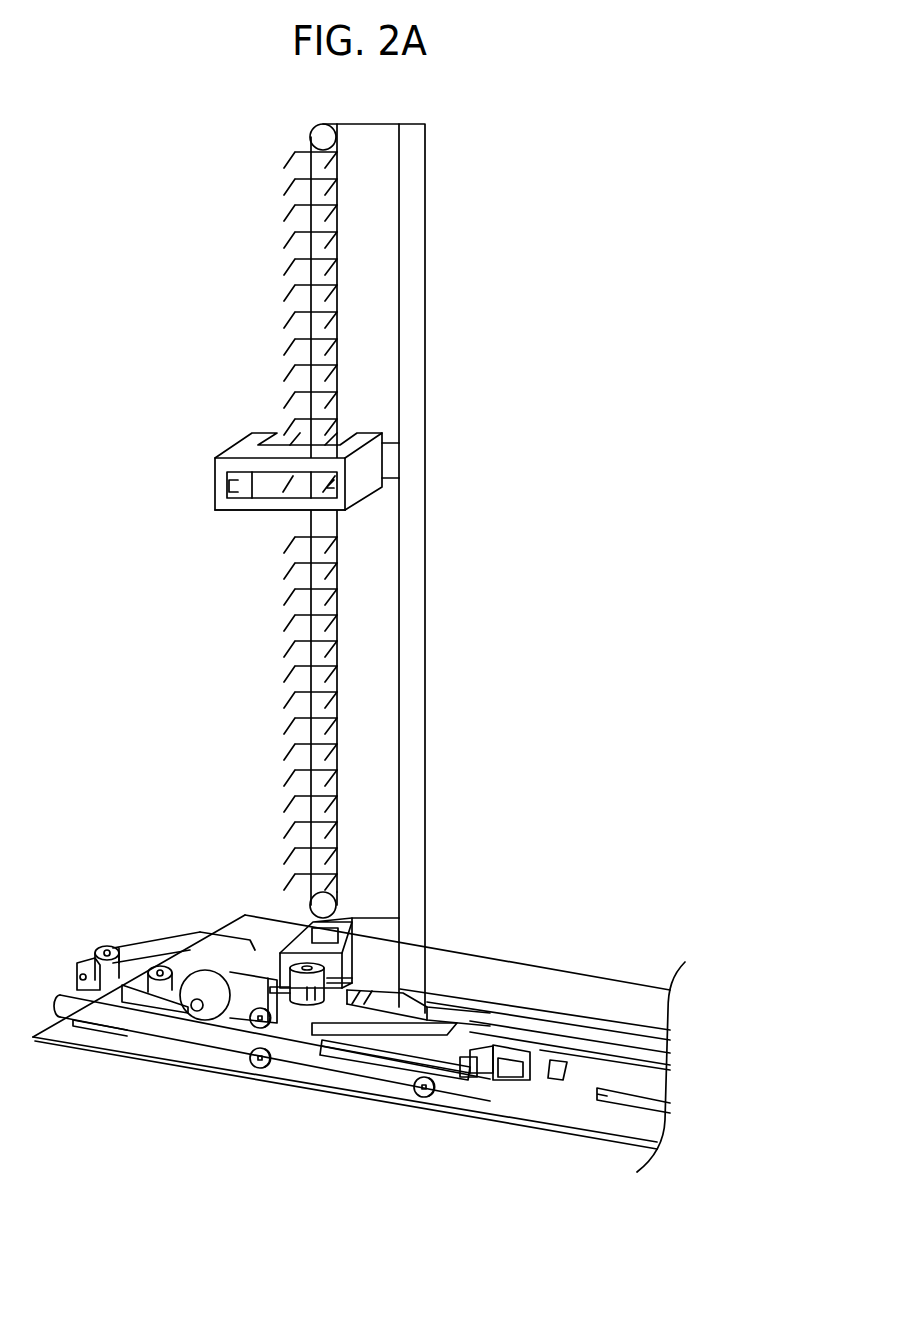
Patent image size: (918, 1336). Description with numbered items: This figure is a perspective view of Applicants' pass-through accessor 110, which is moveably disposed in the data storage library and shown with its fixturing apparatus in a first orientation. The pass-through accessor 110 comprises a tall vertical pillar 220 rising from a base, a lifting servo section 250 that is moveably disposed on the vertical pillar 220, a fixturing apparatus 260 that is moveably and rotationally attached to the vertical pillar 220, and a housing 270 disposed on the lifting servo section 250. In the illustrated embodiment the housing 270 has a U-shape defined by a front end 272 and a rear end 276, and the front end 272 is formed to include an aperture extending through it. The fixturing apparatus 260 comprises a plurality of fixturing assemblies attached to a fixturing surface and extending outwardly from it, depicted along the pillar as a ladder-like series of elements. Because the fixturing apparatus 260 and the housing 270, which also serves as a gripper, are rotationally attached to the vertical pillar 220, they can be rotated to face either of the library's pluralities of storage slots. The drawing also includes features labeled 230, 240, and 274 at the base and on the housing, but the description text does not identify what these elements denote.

The pass-through accessor 110 is at (345, 1132).
The vertical pillar 220 is at (425, 417).
The linear slide 230 is at (575, 1047).
The rail 240 is at (185, 1042).
The lifting servo section 250 is at (392, 462).
The fixturing apparatus 260 is at (270, 702).
The housing 270 is at (254, 488).
The front end 272 is at (267, 481).
The carriage bottom wall 274 is at (230, 512).
The rear end 276 is at (283, 432).